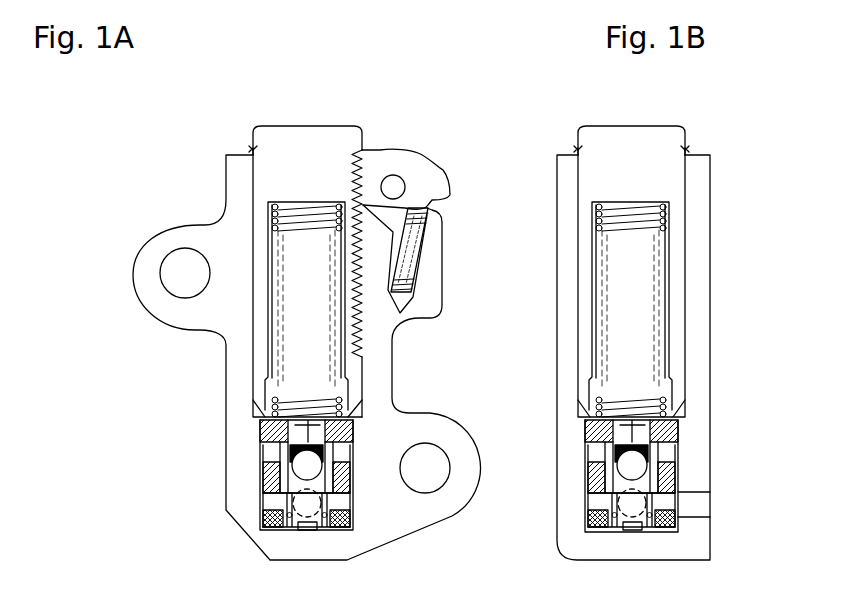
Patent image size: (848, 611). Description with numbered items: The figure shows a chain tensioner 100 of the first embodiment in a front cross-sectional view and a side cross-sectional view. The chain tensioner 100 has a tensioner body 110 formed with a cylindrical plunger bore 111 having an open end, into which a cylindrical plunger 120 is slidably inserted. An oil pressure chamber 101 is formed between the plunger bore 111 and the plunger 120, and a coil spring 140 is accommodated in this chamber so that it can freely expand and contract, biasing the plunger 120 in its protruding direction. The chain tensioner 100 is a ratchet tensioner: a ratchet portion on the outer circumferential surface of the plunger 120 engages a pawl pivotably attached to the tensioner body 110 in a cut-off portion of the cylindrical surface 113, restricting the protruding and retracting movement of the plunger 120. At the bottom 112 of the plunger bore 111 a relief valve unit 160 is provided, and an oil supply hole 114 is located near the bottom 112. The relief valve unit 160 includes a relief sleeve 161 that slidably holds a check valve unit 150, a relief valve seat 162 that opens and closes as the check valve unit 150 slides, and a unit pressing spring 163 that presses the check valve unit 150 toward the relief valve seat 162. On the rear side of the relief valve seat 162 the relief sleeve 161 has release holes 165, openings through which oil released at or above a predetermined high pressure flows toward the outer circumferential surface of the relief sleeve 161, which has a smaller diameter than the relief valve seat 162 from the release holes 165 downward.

In FIG. 1A, the chain tensioner 100 is at (114, 139).
In FIG. 1A, the tensioner body 110 is at (228, 225).
In FIG. 1B, the tensioner body 110 is at (703, 227).
In FIG. 1A, the plunger bore 111 is at (250, 153).
In FIG. 1B, the plunger bore 111 is at (573, 153).
In FIG. 1B, the bottom 112 is at (673, 523).
In FIG. 1A, the cylindrical surface 113 is at (357, 260).
In FIG. 1B, the cylindrical surface 113 is at (585, 262).
In FIG. 1B, the oil supply hole 114 is at (698, 500).
In FIG. 1A, the plunger 120 is at (278, 137).
In FIG. 1B, the plunger 120 is at (668, 147).
In FIG. 1A, the oil pressure chamber 101 is at (297, 322).
In FIG. 1B, the oil pressure chamber 101 is at (637, 330).
In FIG. 1A, the coil spring 140 is at (340, 400).
In FIG. 1B, the coil spring 140 is at (597, 400).
In FIG. 1A, the check valve unit 150 is at (282, 472).
In FIG. 1B, the check valve unit 150 is at (655, 472).
In FIG. 1A, the relief valve unit 160 is at (145, 550).
In FIG. 1B, the relief valve unit 160 is at (680, 437).
In FIG. 1A, the relief sleeve 161 is at (270, 490).
In FIG. 1A, the relief valve seat 162 is at (257, 433).
In FIG. 1A, the unit pressing spring 163 is at (287, 508).
In FIG. 1A, the release holes 165 is at (276, 454).